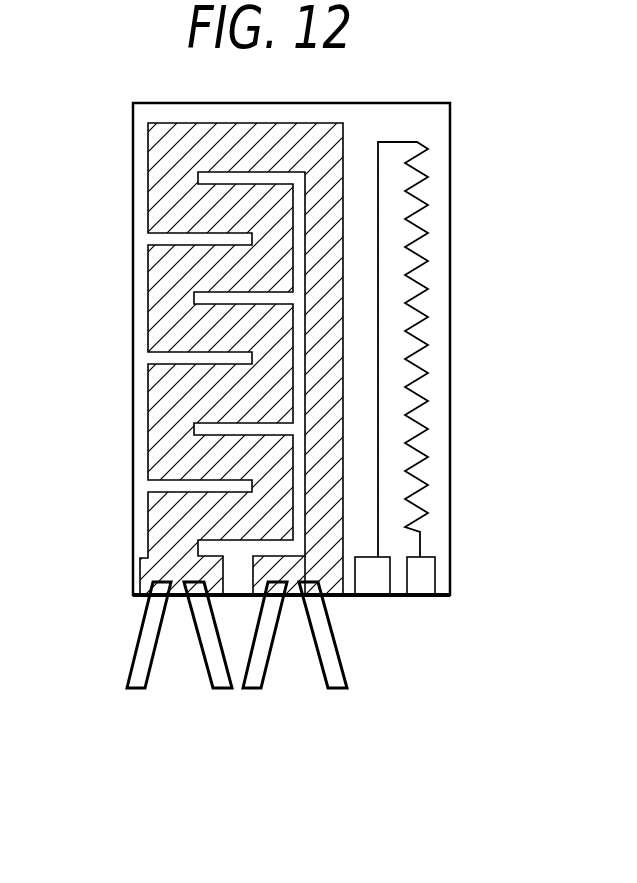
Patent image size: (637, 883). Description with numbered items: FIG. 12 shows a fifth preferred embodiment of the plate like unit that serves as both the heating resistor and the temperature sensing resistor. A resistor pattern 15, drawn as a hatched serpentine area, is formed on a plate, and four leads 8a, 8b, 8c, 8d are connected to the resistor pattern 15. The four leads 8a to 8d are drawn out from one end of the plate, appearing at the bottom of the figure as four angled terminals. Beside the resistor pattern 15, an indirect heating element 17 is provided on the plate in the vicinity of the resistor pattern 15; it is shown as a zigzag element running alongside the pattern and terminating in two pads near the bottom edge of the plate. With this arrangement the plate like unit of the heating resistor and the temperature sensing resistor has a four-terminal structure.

The resistor pattern 15 is at (155, 438).
The indirect heating element 17 is at (420, 565).
The lead 8a is at (335, 690).
The lead 8b is at (251, 690).
The lead 8c is at (220, 690).
The lead 8d is at (132, 690).